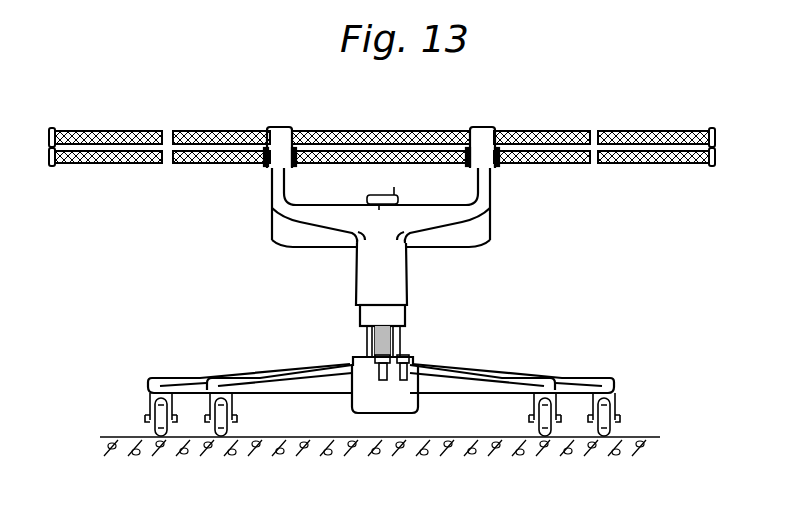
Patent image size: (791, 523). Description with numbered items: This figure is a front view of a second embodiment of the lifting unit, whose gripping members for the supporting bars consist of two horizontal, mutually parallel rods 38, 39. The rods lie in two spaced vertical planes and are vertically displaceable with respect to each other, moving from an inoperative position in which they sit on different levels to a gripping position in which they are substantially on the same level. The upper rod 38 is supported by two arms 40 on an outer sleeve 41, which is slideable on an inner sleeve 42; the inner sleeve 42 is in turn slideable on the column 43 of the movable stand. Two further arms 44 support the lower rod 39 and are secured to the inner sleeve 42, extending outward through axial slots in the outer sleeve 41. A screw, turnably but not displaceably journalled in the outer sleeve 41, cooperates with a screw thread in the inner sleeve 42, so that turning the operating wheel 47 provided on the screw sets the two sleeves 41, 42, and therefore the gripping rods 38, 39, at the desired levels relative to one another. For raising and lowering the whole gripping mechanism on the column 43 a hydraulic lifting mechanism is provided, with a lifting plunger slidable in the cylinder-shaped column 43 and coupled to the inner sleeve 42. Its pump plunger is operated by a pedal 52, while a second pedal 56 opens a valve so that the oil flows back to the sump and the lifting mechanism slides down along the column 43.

The rod 38 is at (641, 131).
The rod 39 is at (644, 163).
The arms 40 is at (271, 186).
The outer sleeve 41 is at (398, 291).
The inner sleeve 42 is at (398, 319).
The column 43 is at (388, 346).
The arms 44 is at (272, 232).
The operating wheel 47 is at (374, 195).
The pedal 52 is at (374, 381).
The pedal 56 is at (410, 366).